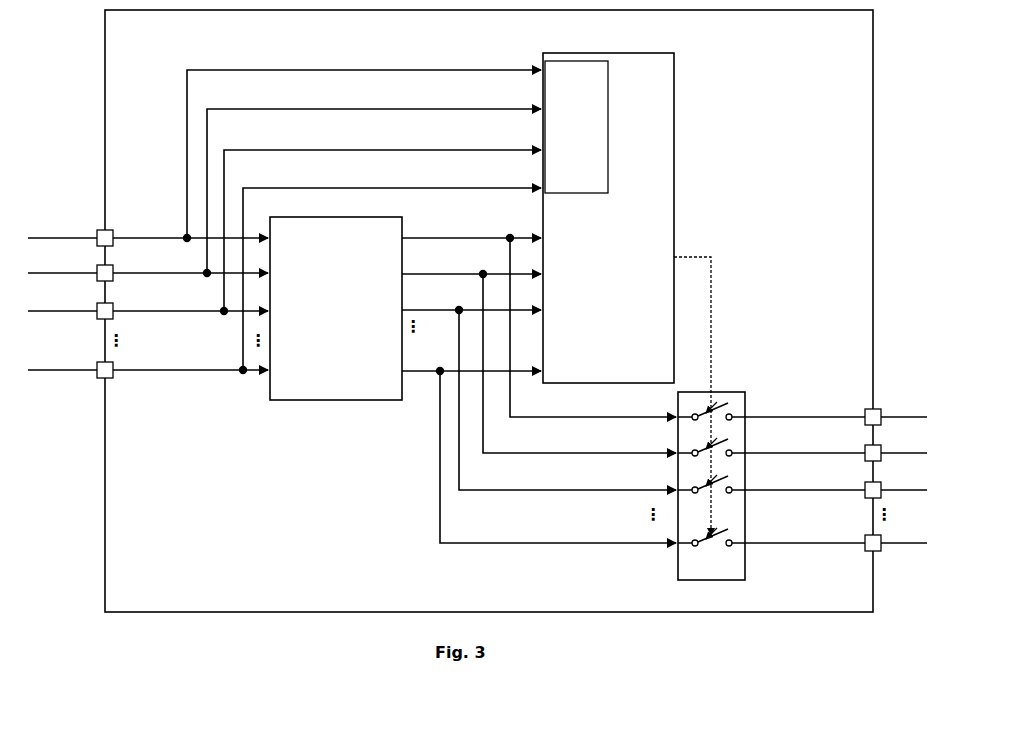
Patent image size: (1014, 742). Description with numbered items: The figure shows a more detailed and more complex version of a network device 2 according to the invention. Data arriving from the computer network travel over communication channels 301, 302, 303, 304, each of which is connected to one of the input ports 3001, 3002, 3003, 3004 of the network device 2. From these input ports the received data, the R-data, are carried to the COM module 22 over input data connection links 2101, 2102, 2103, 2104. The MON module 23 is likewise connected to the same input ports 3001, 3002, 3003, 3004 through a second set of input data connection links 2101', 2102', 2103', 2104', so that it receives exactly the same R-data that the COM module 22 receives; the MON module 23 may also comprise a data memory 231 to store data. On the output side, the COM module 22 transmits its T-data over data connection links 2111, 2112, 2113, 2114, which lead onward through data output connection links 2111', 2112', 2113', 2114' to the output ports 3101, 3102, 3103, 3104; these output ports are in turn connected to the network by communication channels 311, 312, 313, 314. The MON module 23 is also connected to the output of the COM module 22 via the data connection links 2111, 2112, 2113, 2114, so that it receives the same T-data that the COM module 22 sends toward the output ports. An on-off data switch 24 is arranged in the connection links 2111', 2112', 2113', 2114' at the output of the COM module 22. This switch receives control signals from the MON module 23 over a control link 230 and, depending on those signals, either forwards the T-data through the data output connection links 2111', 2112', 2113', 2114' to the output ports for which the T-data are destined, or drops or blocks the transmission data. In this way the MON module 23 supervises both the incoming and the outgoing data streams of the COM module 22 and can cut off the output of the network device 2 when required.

The network device 2 is at (103, 154).
The COM module 22 is at (305, 402).
The MON module 23 is at (617, 52).
The data memory 231 is at (608, 179).
The control link 230 is at (710, 324).
The on-off data switch 24 is at (677, 580).
The communication channel 301 is at (44, 234).
The communication channel 302 is at (44, 270).
The communication channel 303 is at (44, 306).
The communication channel 304 is at (44, 366).
The input port 3001 is at (94, 236).
The input port 3002 is at (94, 272).
The input port 3003 is at (94, 308).
The input port 3004 is at (94, 368).
The input data connection link 2101 is at (190, 224).
The input data connection link 2102 is at (190, 260).
The input data connection link 2103 is at (190, 297).
The input data connection link 2104 is at (190, 356).
The input data connection link 2101' is at (364, 137).
The input data connection link 2102' is at (374, 175).
The input data connection link 2103' is at (382, 214).
The input data connection link 2104' is at (392, 263).
The data connection link 2111 is at (496, 219).
The data connection link 2112 is at (496, 254).
The data connection link 2113 is at (496, 290).
The data connection link 2114 is at (496, 351).
The data output connection link 2111' is at (655, 327).
The data output connection link 2112' is at (642, 363).
The data output connection link 2113' is at (630, 400).
The data output connection link 2114' is at (620, 457).
The output port 3101 is at (862, 411).
The output port 3102 is at (860, 448).
The output port 3103 is at (860, 485).
The output port 3104 is at (860, 537).
The communication channel 311 is at (914, 414).
The communication channel 312 is at (914, 451).
The communication channel 313 is at (914, 487).
The communication channel 314 is at (914, 540).